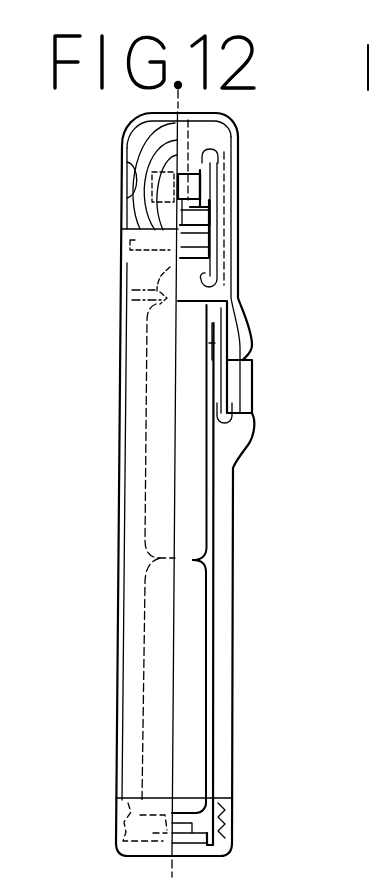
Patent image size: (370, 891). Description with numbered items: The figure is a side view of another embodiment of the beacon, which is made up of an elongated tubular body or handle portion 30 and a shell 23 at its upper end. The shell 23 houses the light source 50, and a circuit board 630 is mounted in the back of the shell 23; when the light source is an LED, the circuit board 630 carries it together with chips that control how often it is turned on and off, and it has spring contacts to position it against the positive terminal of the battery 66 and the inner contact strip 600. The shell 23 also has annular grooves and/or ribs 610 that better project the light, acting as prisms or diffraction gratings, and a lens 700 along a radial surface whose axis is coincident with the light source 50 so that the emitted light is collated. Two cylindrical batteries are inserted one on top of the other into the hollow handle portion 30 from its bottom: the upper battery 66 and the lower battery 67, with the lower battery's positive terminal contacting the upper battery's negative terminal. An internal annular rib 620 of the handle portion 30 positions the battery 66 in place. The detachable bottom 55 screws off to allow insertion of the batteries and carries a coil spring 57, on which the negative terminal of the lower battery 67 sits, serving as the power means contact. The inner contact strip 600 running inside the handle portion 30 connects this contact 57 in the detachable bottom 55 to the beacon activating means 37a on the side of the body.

The shell 23 is at (133, 115).
The annular grooves and/or ribs 610 is at (120, 152).
The lens 700 is at (121, 205).
The internal annular rib 620 is at (162, 278).
The light source 50 is at (196, 190).
The circuit board 630 is at (217, 210).
The beacon activating means 37a is at (258, 378).
The battery 66 is at (187, 417).
The tubular body portion 30 is at (117, 512).
The battery 67 is at (182, 678).
The inner contact strip 600 is at (214, 748).
The detachable bottom 55 is at (118, 822).
The coil spring 57 is at (187, 833).